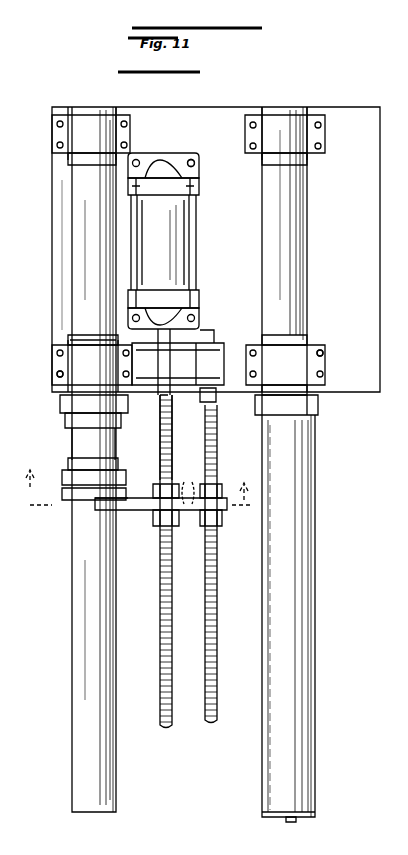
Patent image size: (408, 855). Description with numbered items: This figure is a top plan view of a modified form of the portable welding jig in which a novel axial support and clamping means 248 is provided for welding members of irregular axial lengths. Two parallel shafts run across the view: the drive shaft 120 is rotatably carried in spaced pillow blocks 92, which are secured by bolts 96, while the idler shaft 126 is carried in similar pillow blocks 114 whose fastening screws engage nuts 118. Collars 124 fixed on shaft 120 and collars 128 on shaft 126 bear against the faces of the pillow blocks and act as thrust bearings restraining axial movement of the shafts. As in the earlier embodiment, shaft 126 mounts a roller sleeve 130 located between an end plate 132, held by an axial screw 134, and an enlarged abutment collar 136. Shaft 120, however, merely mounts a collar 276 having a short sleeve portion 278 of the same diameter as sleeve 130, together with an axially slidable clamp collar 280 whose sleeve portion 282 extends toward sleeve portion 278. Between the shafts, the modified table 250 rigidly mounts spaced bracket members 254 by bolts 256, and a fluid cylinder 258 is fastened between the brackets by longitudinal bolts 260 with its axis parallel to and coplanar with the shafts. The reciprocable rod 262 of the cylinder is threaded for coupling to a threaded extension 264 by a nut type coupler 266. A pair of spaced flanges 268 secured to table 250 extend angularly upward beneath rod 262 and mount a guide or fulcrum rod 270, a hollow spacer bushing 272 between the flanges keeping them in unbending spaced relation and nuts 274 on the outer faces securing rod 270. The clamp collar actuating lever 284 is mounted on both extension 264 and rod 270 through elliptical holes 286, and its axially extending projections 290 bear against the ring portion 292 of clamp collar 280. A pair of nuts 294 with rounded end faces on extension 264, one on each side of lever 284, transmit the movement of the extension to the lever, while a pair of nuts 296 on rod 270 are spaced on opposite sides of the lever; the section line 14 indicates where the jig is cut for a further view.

The section line 14 is at (129, 504).
The pillow blocks 92 is at (72, 137).
The bolts 96 is at (58, 372).
The pillow blocks 114 is at (272, 125).
The nuts 118 is at (325, 352).
The drive shaft 120 is at (75, 275).
The collars 124 is at (110, 107).
The idler shaft 126 is at (290, 258).
The collars 128 is at (300, 108).
The metallic sleeve 130 is at (316, 680).
The end plate 132 is at (316, 812).
The screw 134 is at (292, 823).
The abutment collar 136 is at (318, 406).
The axial support and clamping means 248 is at (180, 223).
The table 250 is at (60, 205).
The bracket members 254 is at (165, 162).
The bolts 256 is at (192, 160).
The fluid cylinder 258 is at (172, 238).
The bolts 260 is at (195, 198).
The reciprocable rod 262 is at (100, 342).
The threaded extension 264 is at (162, 592).
The nut type coupler 266 is at (160, 403).
The flanges 268 is at (190, 355).
The guide or fulcrum rod 270 is at (212, 592).
The spacer bushing 272 is at (212, 390).
The nuts 274 is at (180, 322).
The collar 276 is at (64, 423).
The sleeve portion 278 is at (72, 442).
The clamp collar 280 is at (62, 480).
The sleeve portion 282 is at (68, 463).
The clamp collar actuating lever 284 is at (140, 508).
The elliptical holes 286 is at (186, 484).
The axially extending projections 290 is at (95, 502).
The ring portion 292 is at (70, 498).
The nuts 294 is at (158, 488).
The nuts 296 is at (214, 488).